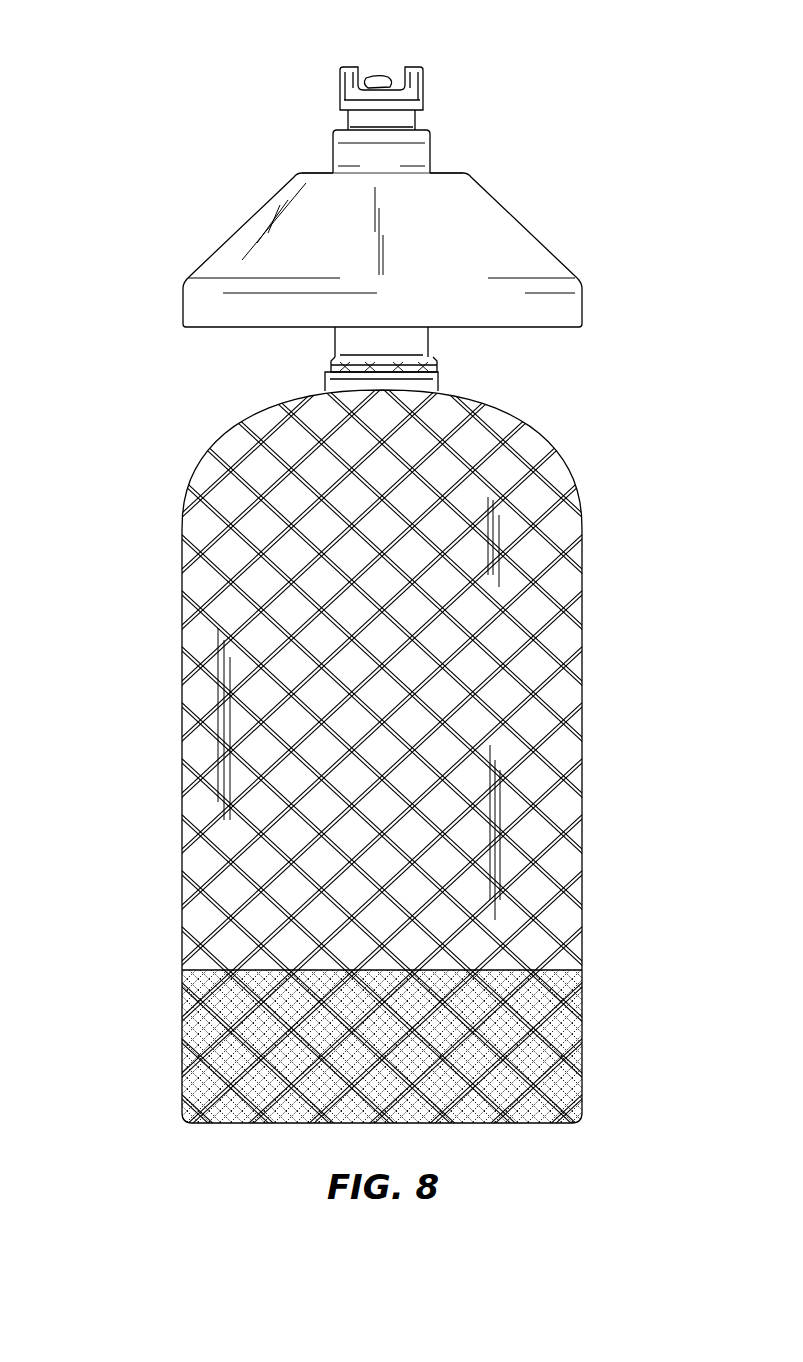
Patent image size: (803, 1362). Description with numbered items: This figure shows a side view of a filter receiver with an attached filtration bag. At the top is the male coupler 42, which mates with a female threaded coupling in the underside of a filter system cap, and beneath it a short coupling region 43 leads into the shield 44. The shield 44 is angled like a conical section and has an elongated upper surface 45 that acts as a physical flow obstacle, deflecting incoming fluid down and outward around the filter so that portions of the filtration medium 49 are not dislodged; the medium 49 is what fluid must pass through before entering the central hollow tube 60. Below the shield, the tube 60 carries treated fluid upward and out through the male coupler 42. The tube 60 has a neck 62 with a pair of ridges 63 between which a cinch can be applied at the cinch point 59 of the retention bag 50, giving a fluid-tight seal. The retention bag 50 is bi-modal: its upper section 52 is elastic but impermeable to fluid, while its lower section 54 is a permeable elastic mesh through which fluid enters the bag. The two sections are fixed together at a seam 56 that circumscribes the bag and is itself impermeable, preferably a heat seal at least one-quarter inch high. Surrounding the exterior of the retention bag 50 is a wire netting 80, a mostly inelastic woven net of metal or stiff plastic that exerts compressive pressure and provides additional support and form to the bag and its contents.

The male coupler 42 is at (423, 80).
The valve neck 43 is at (415, 127).
The filtration medium 49 is at (457, 176).
The shield 44 is at (530, 232).
The upper surface 45 is at (457, 248).
The central hollow tube 60 is at (327, 337).
The ridges 63 is at (433, 362).
The cinch point 59 is at (438, 378).
The neck 62 is at (496, 388).
The retention bag 50 is at (157, 670).
The upper section 52 is at (397, 758).
The lower section 54 is at (582, 1068).
The seam 56 is at (372, 968).
The wire netting 80 is at (168, 577).